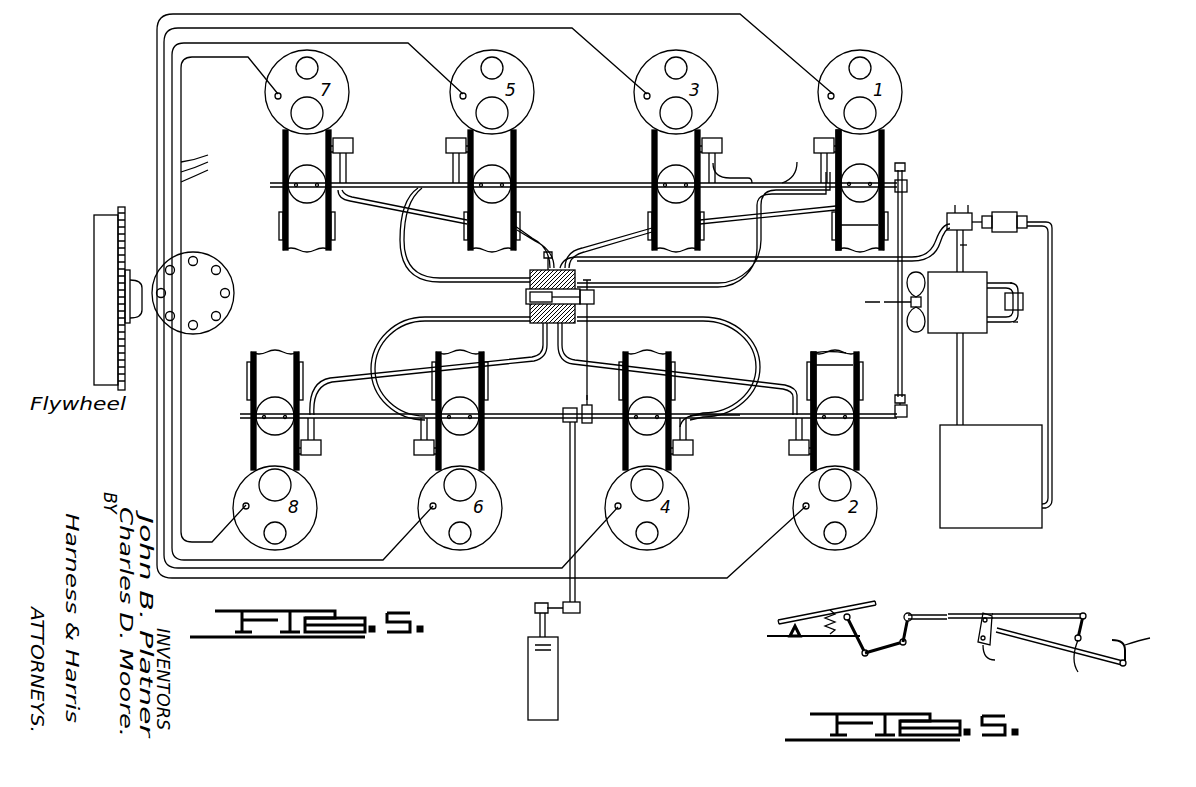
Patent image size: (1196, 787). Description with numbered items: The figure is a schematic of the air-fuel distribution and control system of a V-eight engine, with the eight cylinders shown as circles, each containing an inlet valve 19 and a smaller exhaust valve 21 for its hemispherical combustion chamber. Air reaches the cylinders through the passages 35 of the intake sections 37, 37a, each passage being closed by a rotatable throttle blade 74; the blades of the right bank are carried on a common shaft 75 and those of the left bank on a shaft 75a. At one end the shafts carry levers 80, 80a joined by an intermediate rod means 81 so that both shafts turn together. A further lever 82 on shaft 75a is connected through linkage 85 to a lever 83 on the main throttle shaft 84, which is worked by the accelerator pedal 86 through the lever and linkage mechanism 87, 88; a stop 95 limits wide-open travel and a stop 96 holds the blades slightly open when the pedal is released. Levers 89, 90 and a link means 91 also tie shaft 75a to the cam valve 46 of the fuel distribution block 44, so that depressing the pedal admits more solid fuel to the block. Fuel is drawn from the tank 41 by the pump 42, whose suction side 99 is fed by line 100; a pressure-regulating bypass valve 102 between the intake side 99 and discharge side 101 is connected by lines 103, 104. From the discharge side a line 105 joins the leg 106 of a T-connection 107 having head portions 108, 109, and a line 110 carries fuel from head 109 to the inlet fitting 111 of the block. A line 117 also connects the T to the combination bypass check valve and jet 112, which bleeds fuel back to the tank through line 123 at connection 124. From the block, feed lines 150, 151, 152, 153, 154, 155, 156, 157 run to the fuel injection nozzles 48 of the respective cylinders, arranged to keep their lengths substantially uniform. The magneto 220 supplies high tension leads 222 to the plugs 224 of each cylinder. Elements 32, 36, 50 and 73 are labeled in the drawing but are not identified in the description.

In FIG. 5, the inlet valve 19 is at (314, 115).
In FIG. 5, the exhaust valve 21 is at (313, 67).
In FIG. 5, the cylinder wall 32 is at (886, 140).
In FIG. 5, the intake passage 35 is at (908, 210).
In FIG. 5, the exhaust passage 36 is at (846, 295).
In FIG. 5, the intake section 37 is at (828, 240).
In FIG. 5, the intake extension member 37a is at (856, 352).
In FIG. 5, the fuel tank 41 is at (992, 467).
In FIG. 5, the pump 42 is at (964, 342).
In FIG. 5, the fuel distribution block 44 is at (521, 324).
In FIG. 5, the feed control valve 46 is at (528, 298).
In FIG. 5, the fuel injection nozzle 48 is at (350, 147).
In FIG. 5, the cylinder tube 50 is at (398, 238).
In FIG. 6, the link 73 is at (1152, 631).
In FIG. 5, the throttle blade 74 is at (318, 182).
In FIG. 5, the throttle shaft 75 is at (755, 164).
In FIG. 5, the throttle shaft 75a is at (782, 418).
In FIG. 6, the throttle shaft 75a is at (1008, 658).
In FIG. 5, the lever 80 is at (907, 170).
In FIG. 6, the lever 80 is at (1090, 636).
In FIG. 5, the lever 80a is at (907, 403).
In FIG. 6, the lever 80a is at (1020, 628).
In FIG. 5, the intermediate rod means 81 is at (880, 300).
In FIG. 6, the intermediate rod means 81 is at (1088, 664).
In FIG. 5, the lever 82 is at (567, 420).
In FIG. 6, the lever 82 is at (975, 625).
In FIG. 5, the lever 83 is at (585, 612).
In FIG. 6, the lever 83 is at (908, 645).
In FIG. 5, the main throttle shaft 84 is at (582, 605).
In FIG. 6, the main throttle shaft 84 is at (900, 655).
In FIG. 5, the linkage 85 is at (570, 491).
In FIG. 6, the linkage 85 is at (958, 612).
In FIG. 5, the accelerator pedal 86 is at (545, 672).
In FIG. 6, the accelerator pedal 86 is at (838, 608).
In FIG. 6, the accelerator link 87 is at (838, 645).
In FIG. 6, the lever arm 88 is at (866, 656).
In FIG. 5, the lever 89 is at (588, 422).
In FIG. 6, the lever 89 is at (990, 616).
In FIG. 5, the lever 90 is at (598, 297).
In FIG. 6, the lever 90 is at (1088, 618).
In FIG. 5, the link means 91 is at (590, 331).
In FIG. 6, the link means 91 is at (1045, 614).
In FIG. 6, the stop 95 is at (908, 612).
In FIG. 6, the stop 96 is at (775, 640).
In FIG. 5, the suction side 99 is at (935, 325).
In FIG. 5, the feed line 100 is at (966, 404).
In FIG. 5, the discharge side 101 is at (980, 282).
In FIG. 5, the pressure-regulating bypass valve 102 is at (1025, 301).
In FIG. 5, the feed line 103 is at (1020, 321).
In FIG. 5, the feed line 104 is at (1012, 282).
In FIG. 5, the feed line 105 is at (966, 246).
In FIG. 5, the leg 106 is at (957, 256).
In FIG. 5, the T-connection 107 is at (955, 213).
In FIG. 5, the head portion 108 is at (962, 213).
In FIG. 5, the head portion 109 is at (970, 213).
In FIG. 5, the feed line 110 is at (803, 272).
In FIG. 5, the inlet fitting 111 is at (556, 261).
In FIG. 5, the combination bypass check valve and jet 112 is at (1020, 220).
In FIG. 5, the feed line 117 is at (985, 212).
In FIG. 5, the feed line 123 is at (1055, 401).
In FIG. 5, the tank connection 124 is at (1050, 508).
In FIG. 5, the feed line 150 is at (605, 232).
In FIG. 5, the feed line 151 is at (550, 238).
In FIG. 5, the feed line 152 is at (712, 370).
In FIG. 5, the feed line 153 is at (510, 368).
In FIG. 5, the feed line 154 is at (727, 287).
In FIG. 5, the feed line 155 is at (718, 314).
In FIG. 5, the feed line 156 is at (422, 277).
In FIG. 5, the feed line 157 is at (375, 327).
In FIG. 5, the magneto 220 is at (235, 285).
In FIG. 5, the high tension leads 222 is at (213, 168).
In FIG. 5, the plug 224 is at (275, 97).